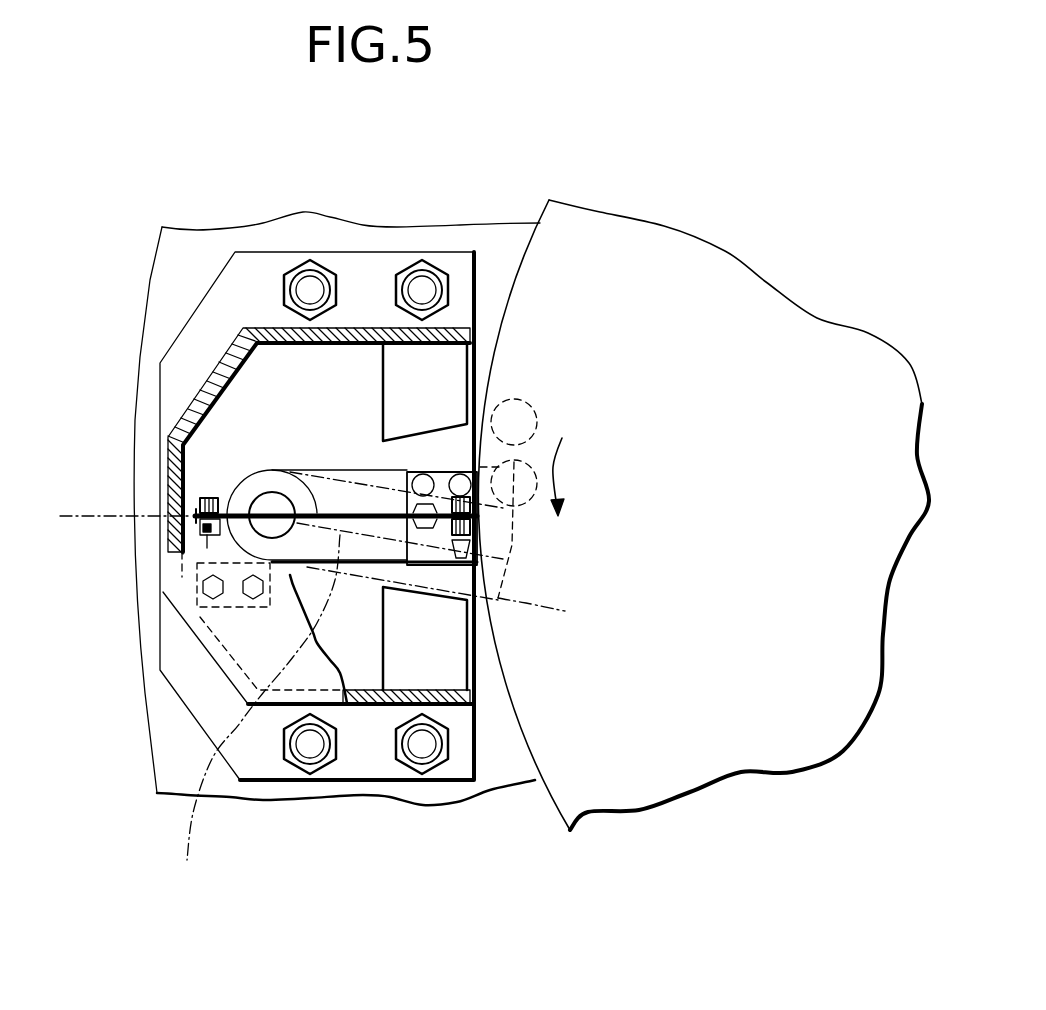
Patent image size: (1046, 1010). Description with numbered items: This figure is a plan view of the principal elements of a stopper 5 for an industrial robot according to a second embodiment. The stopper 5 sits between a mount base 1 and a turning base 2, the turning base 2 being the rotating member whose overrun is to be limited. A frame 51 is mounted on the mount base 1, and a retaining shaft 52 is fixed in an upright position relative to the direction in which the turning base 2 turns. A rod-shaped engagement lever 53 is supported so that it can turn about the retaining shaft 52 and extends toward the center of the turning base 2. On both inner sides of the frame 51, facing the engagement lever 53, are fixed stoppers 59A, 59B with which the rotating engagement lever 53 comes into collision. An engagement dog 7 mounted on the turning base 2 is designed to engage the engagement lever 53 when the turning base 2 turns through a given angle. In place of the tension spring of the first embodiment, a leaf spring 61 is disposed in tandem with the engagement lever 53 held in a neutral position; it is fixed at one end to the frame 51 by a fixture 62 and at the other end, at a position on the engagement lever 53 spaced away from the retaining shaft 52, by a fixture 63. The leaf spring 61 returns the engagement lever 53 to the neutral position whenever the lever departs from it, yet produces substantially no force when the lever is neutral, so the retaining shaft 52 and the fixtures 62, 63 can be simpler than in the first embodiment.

The mount base 1 is at (172, 748).
The turning base 2 is at (728, 282).
The stopper 5 is at (283, 328).
The engagement dog 7 is at (537, 420).
The frame 51 is at (215, 383).
The retaining shaft 52 is at (258, 495).
The engagement lever 53 is at (262, 472).
The stopper 59A is at (453, 363).
The stopper 59B is at (455, 668).
The leaf spring 61 is at (317, 513).
The fixture 62 is at (210, 547).
The fixture 63 is at (442, 473).